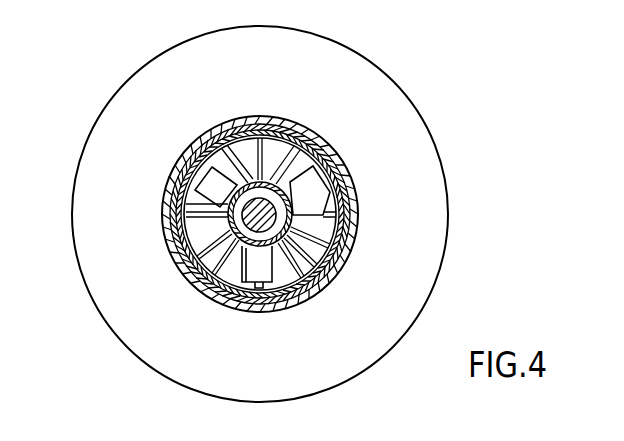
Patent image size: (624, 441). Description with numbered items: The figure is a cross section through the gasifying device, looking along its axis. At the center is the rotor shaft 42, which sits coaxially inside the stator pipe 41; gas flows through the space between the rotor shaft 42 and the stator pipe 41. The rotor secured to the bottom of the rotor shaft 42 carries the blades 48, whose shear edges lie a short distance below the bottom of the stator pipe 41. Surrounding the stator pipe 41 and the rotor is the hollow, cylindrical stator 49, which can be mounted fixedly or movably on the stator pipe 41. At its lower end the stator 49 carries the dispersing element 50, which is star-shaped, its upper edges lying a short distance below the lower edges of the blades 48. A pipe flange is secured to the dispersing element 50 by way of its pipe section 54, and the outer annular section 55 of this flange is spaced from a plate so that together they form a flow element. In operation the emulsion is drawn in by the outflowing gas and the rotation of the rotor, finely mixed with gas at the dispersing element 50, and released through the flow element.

The annular section 55 is at (400, 114).
The pipe section 54 is at (338, 166).
The dispersing element 50 is at (345, 198).
The stator 49 is at (352, 239).
The stator pipe 41 is at (330, 265).
The rotor shaft 42 is at (203, 270).
The blades 48 is at (216, 287).